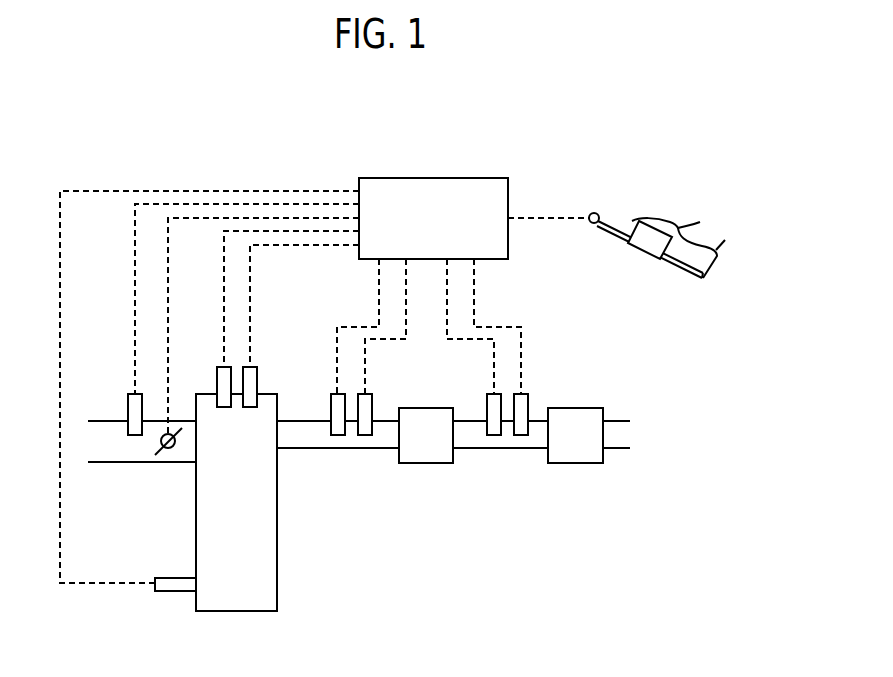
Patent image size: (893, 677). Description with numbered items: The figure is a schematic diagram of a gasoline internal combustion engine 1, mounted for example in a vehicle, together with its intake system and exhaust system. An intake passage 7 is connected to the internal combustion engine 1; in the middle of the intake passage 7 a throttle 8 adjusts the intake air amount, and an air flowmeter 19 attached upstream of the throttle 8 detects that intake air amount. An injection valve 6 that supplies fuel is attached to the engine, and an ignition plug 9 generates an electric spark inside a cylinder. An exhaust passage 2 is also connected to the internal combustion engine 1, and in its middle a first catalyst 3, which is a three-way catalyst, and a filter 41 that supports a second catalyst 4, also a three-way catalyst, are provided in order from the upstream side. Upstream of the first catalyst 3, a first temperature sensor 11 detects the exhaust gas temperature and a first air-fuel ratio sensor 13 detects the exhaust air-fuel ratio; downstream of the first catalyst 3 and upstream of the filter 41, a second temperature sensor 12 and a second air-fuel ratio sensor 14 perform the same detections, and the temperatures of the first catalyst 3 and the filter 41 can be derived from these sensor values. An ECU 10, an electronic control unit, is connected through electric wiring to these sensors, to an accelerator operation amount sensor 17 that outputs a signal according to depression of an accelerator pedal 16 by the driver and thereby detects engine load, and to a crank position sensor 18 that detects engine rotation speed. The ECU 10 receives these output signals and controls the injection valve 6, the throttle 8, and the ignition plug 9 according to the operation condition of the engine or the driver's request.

The internal combustion engine 1 is at (278, 584).
The exhaust passage 2 is at (317, 448).
The first catalyst 3 is at (423, 464).
The second catalyst 4 is at (575, 480).
The filter 41 is at (575, 464).
The injection valve 6 is at (258, 368).
The intake passage 7 is at (133, 462).
The throttle 8 is at (168, 448).
The ignition plug 9 is at (215, 368).
The ECU 10 is at (362, 260).
The first temperature sensor 11 is at (331, 397).
The second temperature sensor 12 is at (487, 399).
The first air-fuel ratio sensor 13 is at (374, 397).
The second air-fuel ratio sensor 14 is at (530, 399).
The accelerator pedal 16 is at (665, 258).
The accelerator operation amount sensor 17 is at (591, 223).
The crank position sensor 18 is at (180, 578).
The air flowmeter 19 is at (128, 394).